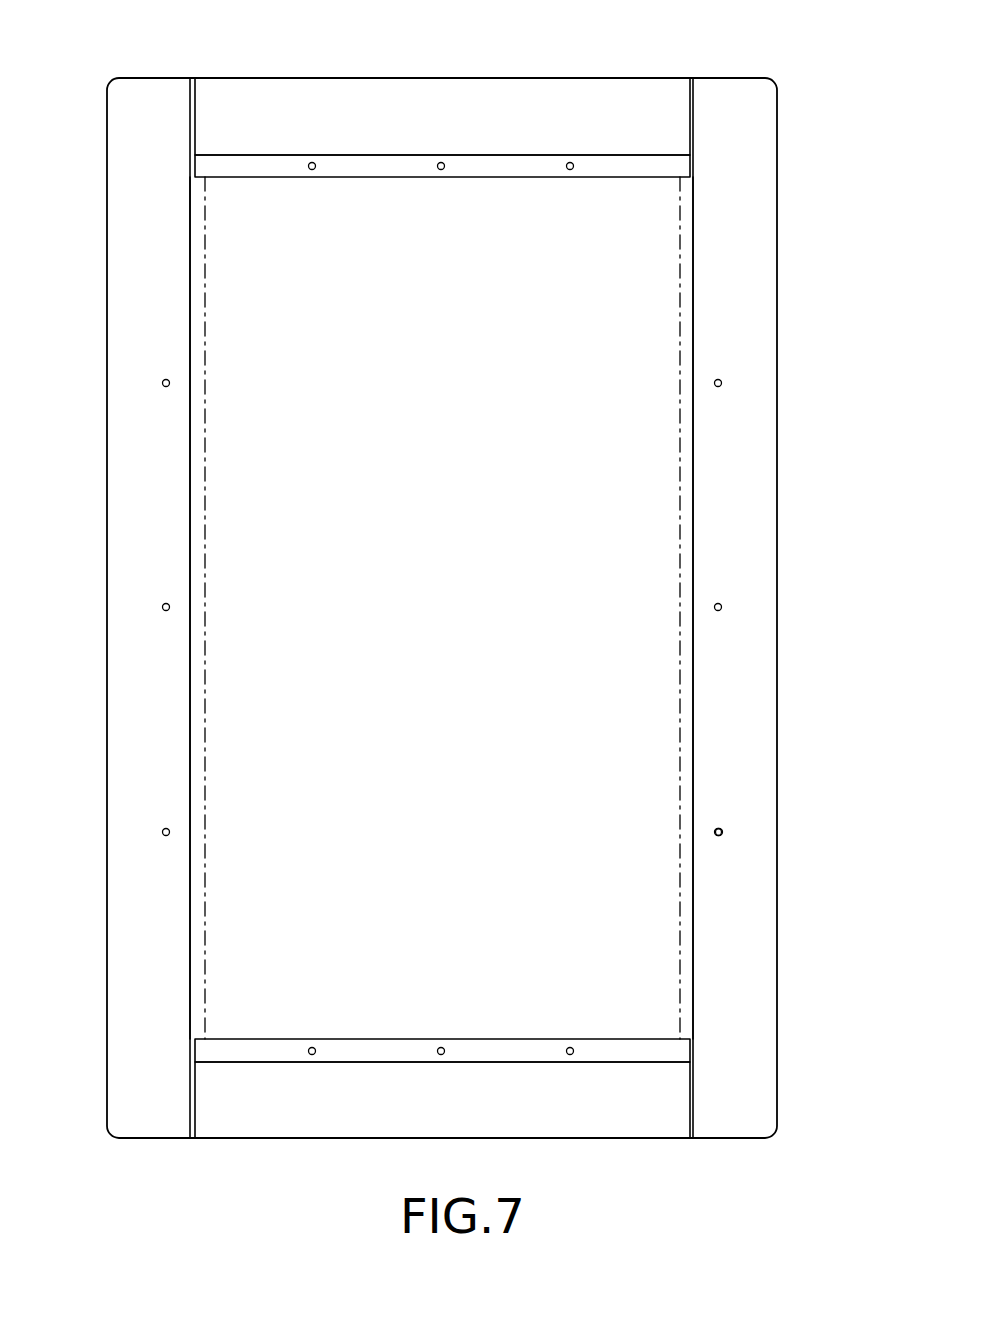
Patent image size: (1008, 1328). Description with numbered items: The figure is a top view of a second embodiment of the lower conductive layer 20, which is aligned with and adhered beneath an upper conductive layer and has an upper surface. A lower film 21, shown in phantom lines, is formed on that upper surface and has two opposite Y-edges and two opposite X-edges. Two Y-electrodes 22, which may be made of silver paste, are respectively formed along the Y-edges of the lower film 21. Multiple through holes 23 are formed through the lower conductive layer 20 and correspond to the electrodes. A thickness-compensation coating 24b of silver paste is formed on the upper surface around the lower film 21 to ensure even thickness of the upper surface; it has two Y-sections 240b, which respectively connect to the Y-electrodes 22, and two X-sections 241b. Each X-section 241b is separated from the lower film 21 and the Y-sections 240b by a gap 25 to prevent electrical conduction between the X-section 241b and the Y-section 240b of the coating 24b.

The lower conductive layer 20 is at (501, 576).
The lower film 21 is at (648, 566).
The Y-electrode 22 is at (598, 168).
The through hole 23 is at (722, 830).
The thickness-compensation coating 24b is at (519, 576).
The gap 25 is at (688, 485).
The Y-section 240b is at (350, 100).
The X-section 241b is at (752, 200).